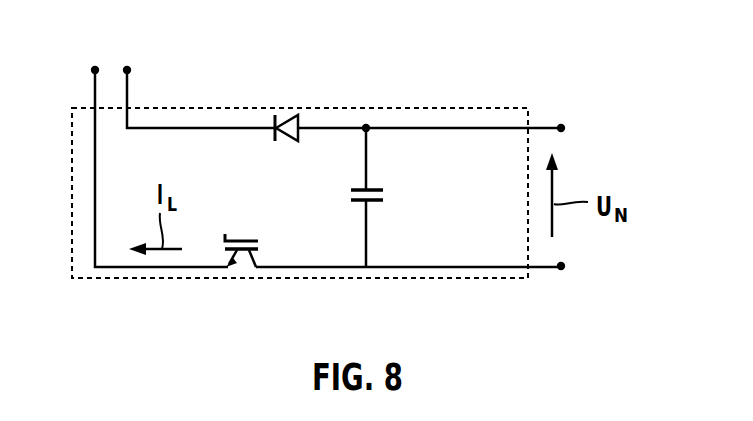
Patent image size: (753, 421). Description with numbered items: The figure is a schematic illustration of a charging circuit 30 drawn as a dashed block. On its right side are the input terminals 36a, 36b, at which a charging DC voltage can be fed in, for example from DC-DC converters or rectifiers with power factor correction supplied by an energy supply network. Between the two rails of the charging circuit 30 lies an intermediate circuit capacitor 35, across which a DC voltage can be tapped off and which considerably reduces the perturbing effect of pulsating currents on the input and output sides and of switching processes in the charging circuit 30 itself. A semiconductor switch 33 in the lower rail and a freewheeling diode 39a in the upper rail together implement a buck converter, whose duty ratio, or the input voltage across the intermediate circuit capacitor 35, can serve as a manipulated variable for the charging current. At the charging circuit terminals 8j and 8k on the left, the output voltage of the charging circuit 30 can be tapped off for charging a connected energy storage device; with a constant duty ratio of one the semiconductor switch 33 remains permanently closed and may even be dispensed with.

The charging circuit terminal 8j is at (95, 70).
The charging circuit terminal 8k is at (127, 70).
The charging circuit 30 is at (258, 107).
The freewheeling diode 39a is at (286, 144).
The intermediate circuit capacitor 35 is at (384, 197).
The input terminal 36b is at (563, 126).
The input terminal 36a is at (563, 268).
The semiconductor switch 33 is at (240, 264).